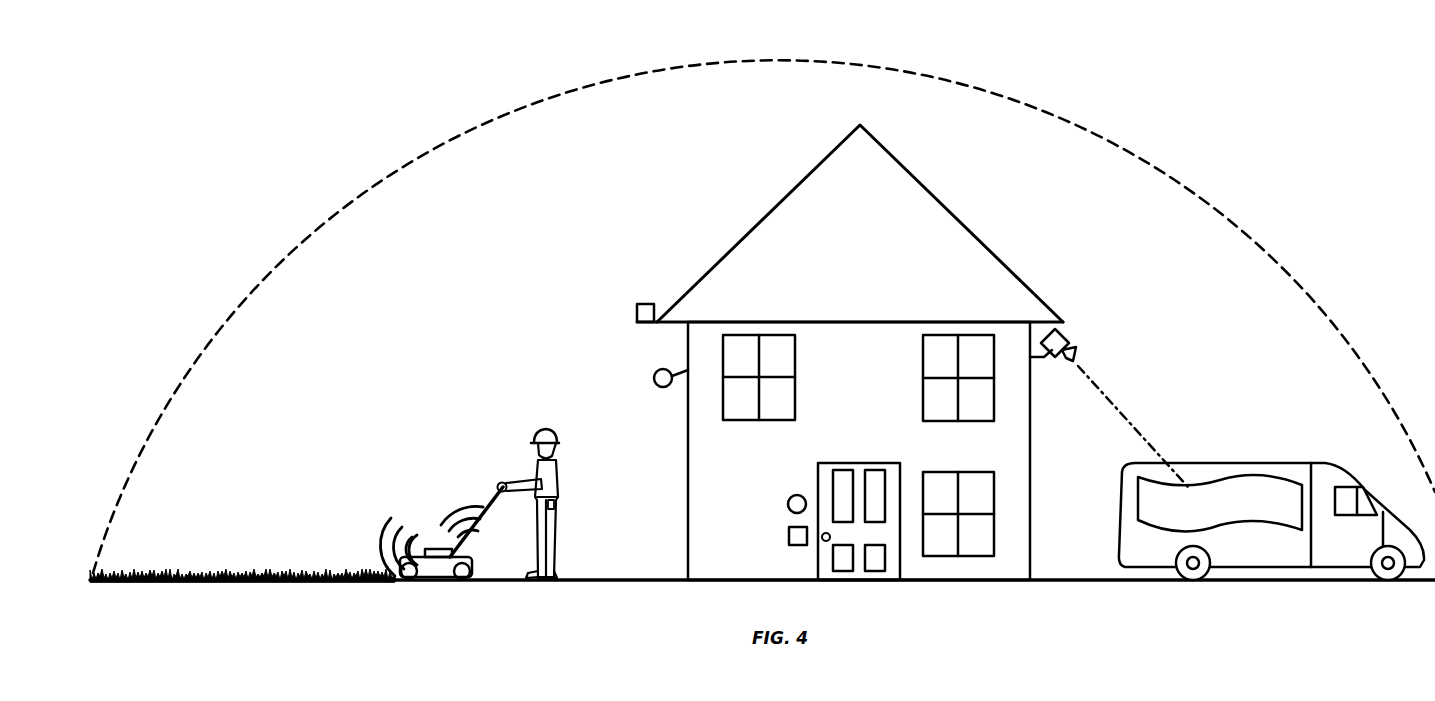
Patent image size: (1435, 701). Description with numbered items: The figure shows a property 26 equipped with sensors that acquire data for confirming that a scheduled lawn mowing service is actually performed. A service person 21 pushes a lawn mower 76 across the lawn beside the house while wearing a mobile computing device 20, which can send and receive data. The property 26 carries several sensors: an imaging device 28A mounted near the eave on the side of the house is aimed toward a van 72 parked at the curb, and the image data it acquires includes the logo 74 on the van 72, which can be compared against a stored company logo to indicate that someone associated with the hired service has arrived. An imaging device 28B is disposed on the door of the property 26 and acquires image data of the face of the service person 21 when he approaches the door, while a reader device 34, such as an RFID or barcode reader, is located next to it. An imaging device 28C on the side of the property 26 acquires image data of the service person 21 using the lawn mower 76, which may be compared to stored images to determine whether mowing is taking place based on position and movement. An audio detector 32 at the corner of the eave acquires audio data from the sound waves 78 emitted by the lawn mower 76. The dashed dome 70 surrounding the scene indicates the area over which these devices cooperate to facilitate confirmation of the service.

The wireless coverage area 70 is at (798, 57).
The property 26 is at (963, 221).
The audio detector 32 is at (637, 312).
The imaging device 28C is at (655, 385).
The imaging device 28B is at (790, 498).
The reader device 34 is at (789, 532).
The imaging device 28A is at (1068, 339).
The lawn mower 76 is at (430, 549).
The sound waves 78 is at (455, 508).
The mobile computing device 20 is at (556, 483).
The service person 21 is at (546, 431).
The van 72 is at (1240, 463).
The logo 74 is at (1138, 492).